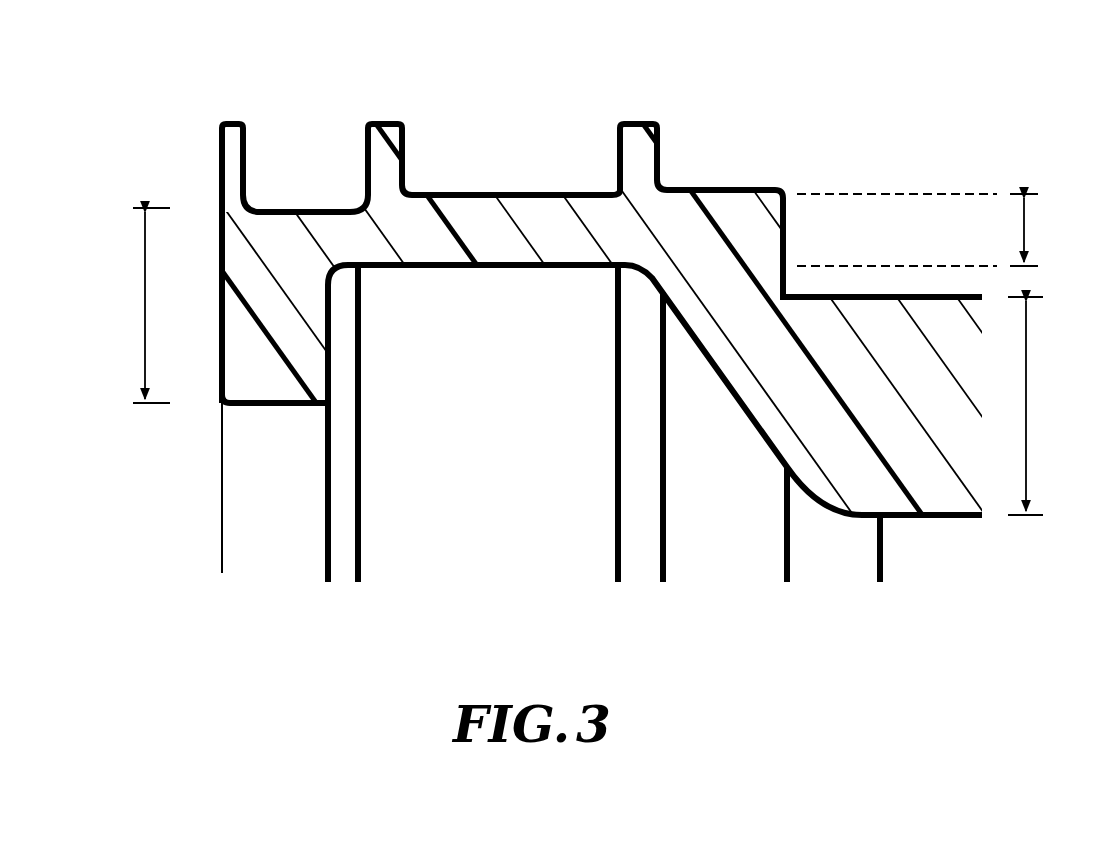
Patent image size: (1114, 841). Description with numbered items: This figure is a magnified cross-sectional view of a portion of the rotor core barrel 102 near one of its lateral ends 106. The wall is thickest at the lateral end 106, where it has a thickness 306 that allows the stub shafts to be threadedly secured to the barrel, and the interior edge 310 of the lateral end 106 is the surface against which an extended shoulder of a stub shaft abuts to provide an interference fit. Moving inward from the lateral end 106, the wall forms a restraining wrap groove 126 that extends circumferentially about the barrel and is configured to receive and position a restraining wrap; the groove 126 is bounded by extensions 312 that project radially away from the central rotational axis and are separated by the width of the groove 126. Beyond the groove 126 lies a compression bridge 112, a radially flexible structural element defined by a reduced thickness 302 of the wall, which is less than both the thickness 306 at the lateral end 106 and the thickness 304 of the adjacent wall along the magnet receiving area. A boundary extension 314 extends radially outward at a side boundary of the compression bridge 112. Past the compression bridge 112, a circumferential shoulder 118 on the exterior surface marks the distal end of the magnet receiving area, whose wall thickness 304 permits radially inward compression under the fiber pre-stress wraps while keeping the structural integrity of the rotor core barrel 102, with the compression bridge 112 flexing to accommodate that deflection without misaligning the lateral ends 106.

The rotor core barrel 102 is at (773, 88).
The lateral end 106 is at (220, 193).
The compression bridge 112 is at (507, 168).
The circumferential shoulder 118 is at (786, 250).
The restraining wrap groove 126 is at (292, 172).
The reduced thickness 302 is at (937, 230).
The thickness of the adjacent wall 304 is at (1044, 406).
The thickness of the wall at the lateral ends 306 is at (130, 305).
The interior edge 310 is at (265, 418).
The extension 312 is at (229, 124).
The boundary extension 314 is at (627, 124).